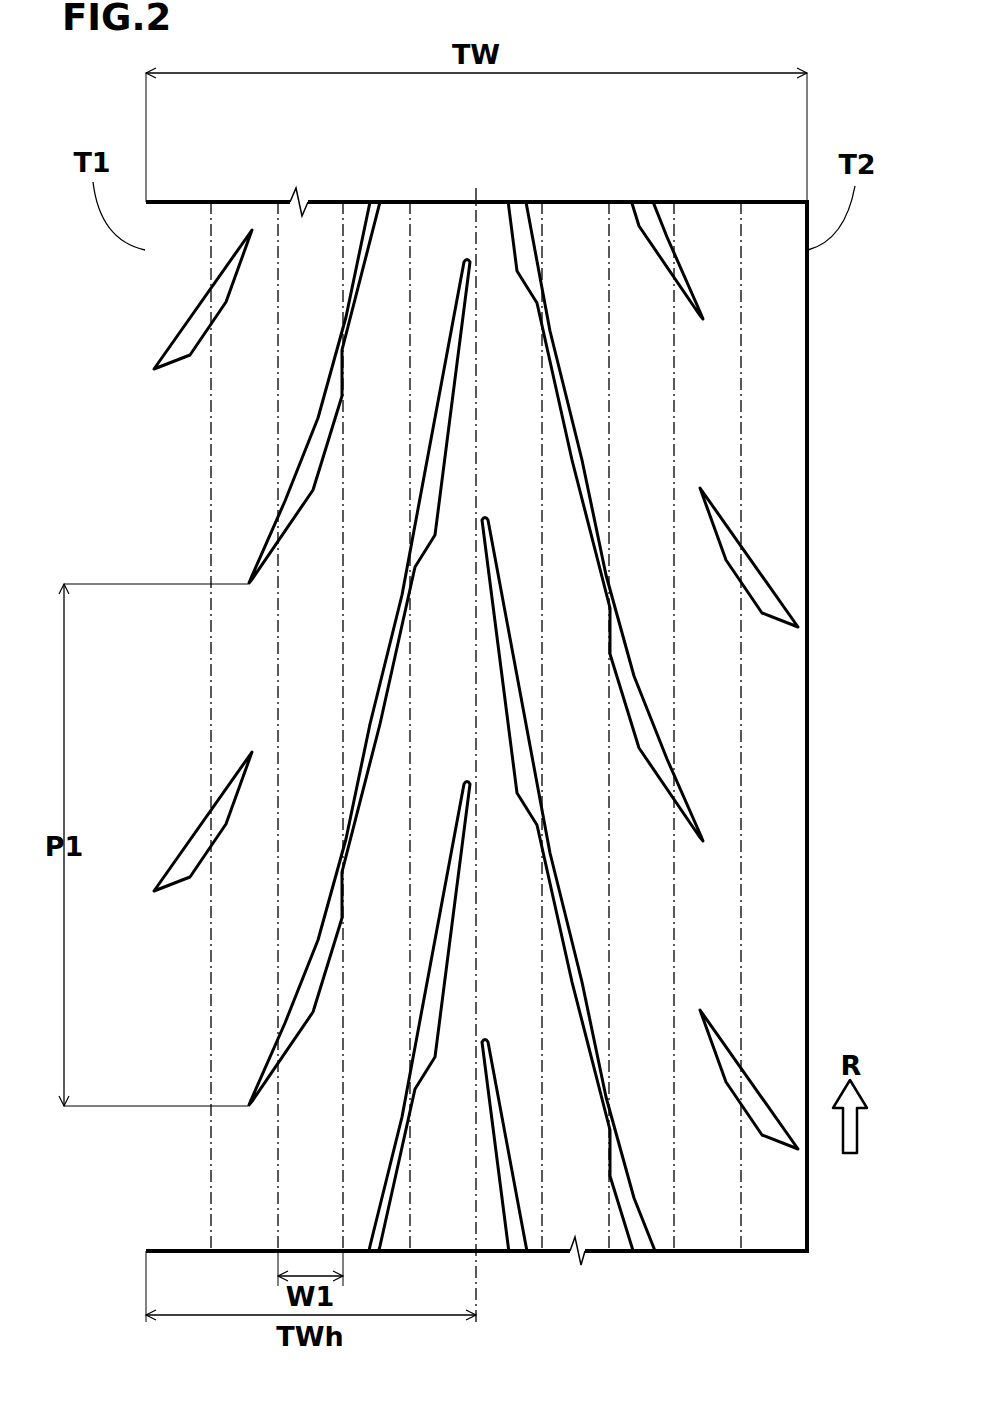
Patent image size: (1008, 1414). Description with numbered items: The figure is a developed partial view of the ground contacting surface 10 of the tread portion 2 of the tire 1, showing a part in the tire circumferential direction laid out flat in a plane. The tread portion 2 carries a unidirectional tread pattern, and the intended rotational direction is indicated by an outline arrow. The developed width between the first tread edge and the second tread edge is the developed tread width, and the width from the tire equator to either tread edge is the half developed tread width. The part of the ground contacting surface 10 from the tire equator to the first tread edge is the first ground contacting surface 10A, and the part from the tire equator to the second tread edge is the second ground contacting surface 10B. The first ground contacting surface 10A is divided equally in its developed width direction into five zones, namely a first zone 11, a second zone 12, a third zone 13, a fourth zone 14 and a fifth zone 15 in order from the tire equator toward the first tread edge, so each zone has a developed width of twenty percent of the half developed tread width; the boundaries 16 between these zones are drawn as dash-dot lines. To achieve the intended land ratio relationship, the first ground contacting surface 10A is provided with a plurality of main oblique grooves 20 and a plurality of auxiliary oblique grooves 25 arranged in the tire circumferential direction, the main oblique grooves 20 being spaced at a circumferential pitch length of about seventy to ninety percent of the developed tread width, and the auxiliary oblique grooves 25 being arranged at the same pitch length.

The tire 1 is at (770, 385).
The tread portion 2 is at (770, 463).
The ground contacting surface 10 is at (705, 358).
The first ground contacting surface 10A is at (448, 140).
The second ground contacting surface 10B is at (793, 140).
The first zone 11 is at (443, 245).
The second zone 12 is at (382, 250).
The third zone 13 is at (311, 245).
The fourth zone 14 is at (247, 280).
The fifth zone 15 is at (176, 240).
The boundaries 16 is at (213, 381).
The main oblique grooves 20 is at (312, 456).
The auxiliary oblique grooves 25 is at (198, 327).